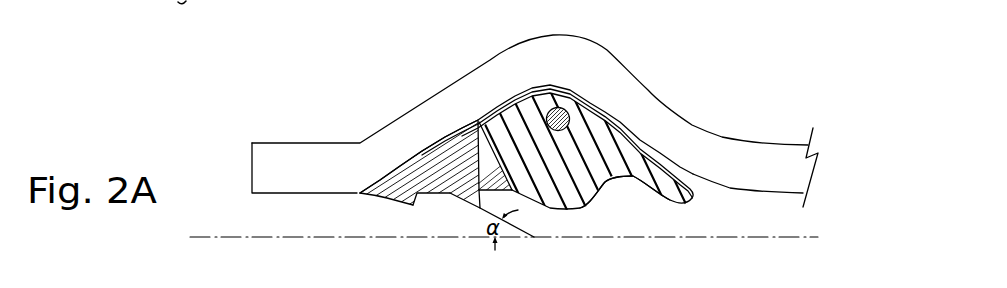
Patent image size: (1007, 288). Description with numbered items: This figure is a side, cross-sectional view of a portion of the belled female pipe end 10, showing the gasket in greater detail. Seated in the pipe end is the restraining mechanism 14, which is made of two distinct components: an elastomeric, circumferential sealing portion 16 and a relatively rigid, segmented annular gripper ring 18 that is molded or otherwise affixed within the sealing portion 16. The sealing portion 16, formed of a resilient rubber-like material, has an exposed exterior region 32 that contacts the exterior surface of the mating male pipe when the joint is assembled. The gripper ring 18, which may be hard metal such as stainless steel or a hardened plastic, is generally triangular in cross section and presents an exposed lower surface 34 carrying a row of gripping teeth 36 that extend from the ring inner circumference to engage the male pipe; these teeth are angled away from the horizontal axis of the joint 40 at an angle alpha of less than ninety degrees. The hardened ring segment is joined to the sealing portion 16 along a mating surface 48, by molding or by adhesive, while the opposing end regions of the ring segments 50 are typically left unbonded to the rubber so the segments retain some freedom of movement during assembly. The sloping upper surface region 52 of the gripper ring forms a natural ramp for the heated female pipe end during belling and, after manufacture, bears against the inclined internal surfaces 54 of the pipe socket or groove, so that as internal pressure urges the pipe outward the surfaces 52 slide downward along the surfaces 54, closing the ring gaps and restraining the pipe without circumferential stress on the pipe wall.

The belled female pipe end 10 is at (765, 143).
The restraining mechanism 14 is at (592, 105).
The sealing portion 16 is at (640, 150).
The gripper ring 18 is at (477, 113).
The exposed exterior region 32 is at (644, 188).
The exposed lower surface 34 is at (377, 198).
The gripping teeth 36 is at (417, 203).
The horizontal axis of the joint 40 is at (818, 237).
The mating surface 48 is at (465, 186).
The opposing end regions of the ring segments 50 is at (483, 121).
The sloping upper surface region 52 is at (418, 153).
The inclined internal surfaces 54 is at (441, 138).